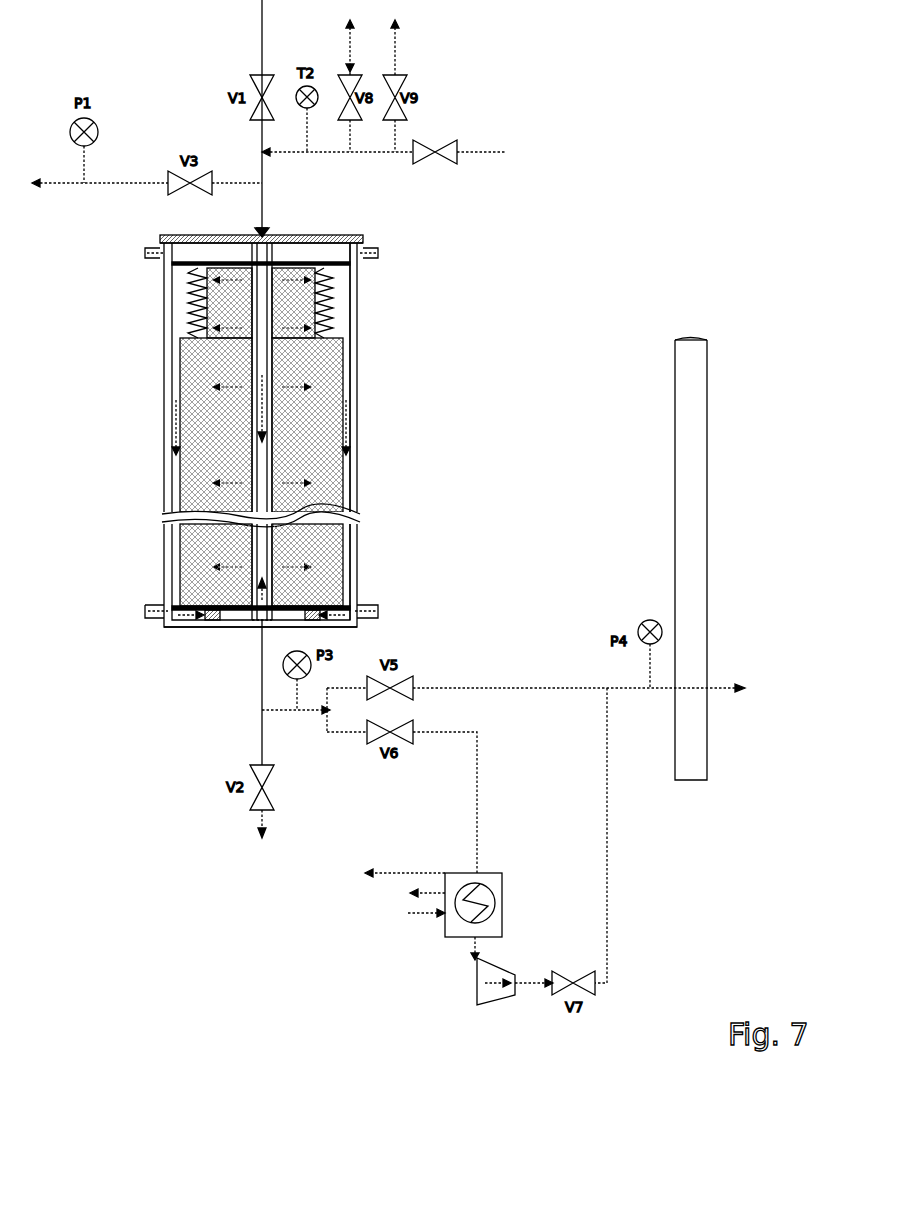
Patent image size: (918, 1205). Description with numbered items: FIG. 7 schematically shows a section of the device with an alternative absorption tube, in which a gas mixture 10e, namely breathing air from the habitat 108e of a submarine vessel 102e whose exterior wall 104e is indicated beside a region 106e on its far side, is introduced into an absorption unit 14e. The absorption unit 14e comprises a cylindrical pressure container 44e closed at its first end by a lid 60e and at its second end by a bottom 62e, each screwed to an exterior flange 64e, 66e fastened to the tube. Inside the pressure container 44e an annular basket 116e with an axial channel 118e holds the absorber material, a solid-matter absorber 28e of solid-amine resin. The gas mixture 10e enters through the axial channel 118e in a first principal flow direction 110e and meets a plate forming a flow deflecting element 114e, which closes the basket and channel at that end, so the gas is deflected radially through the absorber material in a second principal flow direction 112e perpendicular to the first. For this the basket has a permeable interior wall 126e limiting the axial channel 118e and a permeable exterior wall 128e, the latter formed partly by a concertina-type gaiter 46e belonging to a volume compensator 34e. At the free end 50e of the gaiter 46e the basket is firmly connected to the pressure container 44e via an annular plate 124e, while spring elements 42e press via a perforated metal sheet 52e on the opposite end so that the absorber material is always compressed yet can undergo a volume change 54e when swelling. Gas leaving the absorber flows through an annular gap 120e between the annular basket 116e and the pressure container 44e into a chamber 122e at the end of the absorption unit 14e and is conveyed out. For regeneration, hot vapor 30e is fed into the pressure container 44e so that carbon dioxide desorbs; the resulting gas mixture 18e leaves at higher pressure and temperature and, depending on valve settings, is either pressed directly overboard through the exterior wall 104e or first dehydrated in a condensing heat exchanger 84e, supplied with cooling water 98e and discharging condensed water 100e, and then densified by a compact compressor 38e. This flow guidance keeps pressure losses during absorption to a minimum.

The gas mixture 10e is at (262, 25).
The hot vapor 30e is at (505, 152).
The lid 60e is at (300, 237).
The annular plate 124e is at (215, 237).
The perforated metal sheet 52e is at (165, 265).
The exterior flange 64e is at (372, 258).
The absorption unit 14e is at (135, 307).
The free end of the concertina-type gaiter 50e is at (325, 275).
The volume compensator 34e is at (182, 310).
The concertina-type gaiter 46e is at (335, 330).
The axial channel 118e is at (288, 385).
The first principal flow direction 110e is at (258, 405).
The pressure container 44e is at (356, 420).
The annular basket 116e is at (175, 437).
The solid-matter absorber 28e is at (213, 462).
The second principal flow direction 112e is at (300, 482).
The exterior wall 128e is at (185, 520).
The annular gap 120e is at (178, 557).
The interior wall 126e is at (245, 552).
The spring elements 42e is at (195, 628).
The chamber 122e is at (225, 622).
The volume change 54e is at (260, 593).
The exterior flange 66e is at (372, 605).
The bottom 62e is at (365, 625).
The flow deflecting element 114e is at (330, 585).
The gas mixture 18e is at (542, 688).
The condensing heat exchanger 84e is at (445, 928).
The condensed water 100e is at (395, 873).
The cooling water 98e is at (410, 913).
The compressor 38e is at (477, 997).
The submarine vessel 102e is at (720, 418).
The exterior wall 104e is at (690, 358).
The habitat 108e is at (634, 411).
The second region 106e is at (796, 580).